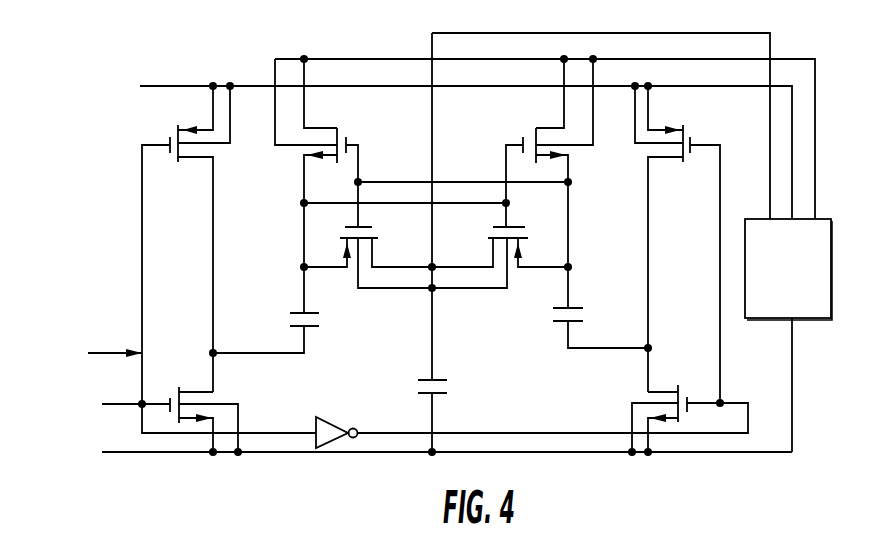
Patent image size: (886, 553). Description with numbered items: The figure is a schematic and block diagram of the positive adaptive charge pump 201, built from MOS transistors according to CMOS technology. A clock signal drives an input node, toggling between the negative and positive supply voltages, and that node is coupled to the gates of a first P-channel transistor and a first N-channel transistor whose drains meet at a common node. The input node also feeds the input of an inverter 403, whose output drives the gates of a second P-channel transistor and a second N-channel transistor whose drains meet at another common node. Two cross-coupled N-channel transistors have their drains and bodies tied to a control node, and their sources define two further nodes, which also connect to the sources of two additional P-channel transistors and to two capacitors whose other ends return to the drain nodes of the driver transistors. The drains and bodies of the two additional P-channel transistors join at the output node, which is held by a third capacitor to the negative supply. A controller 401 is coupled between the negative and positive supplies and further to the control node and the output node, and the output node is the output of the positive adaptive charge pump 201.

The positive adaptive charge pump 201 is at (82, 235).
The controller 401 is at (800, 298).
The inverter 403 is at (330, 418).